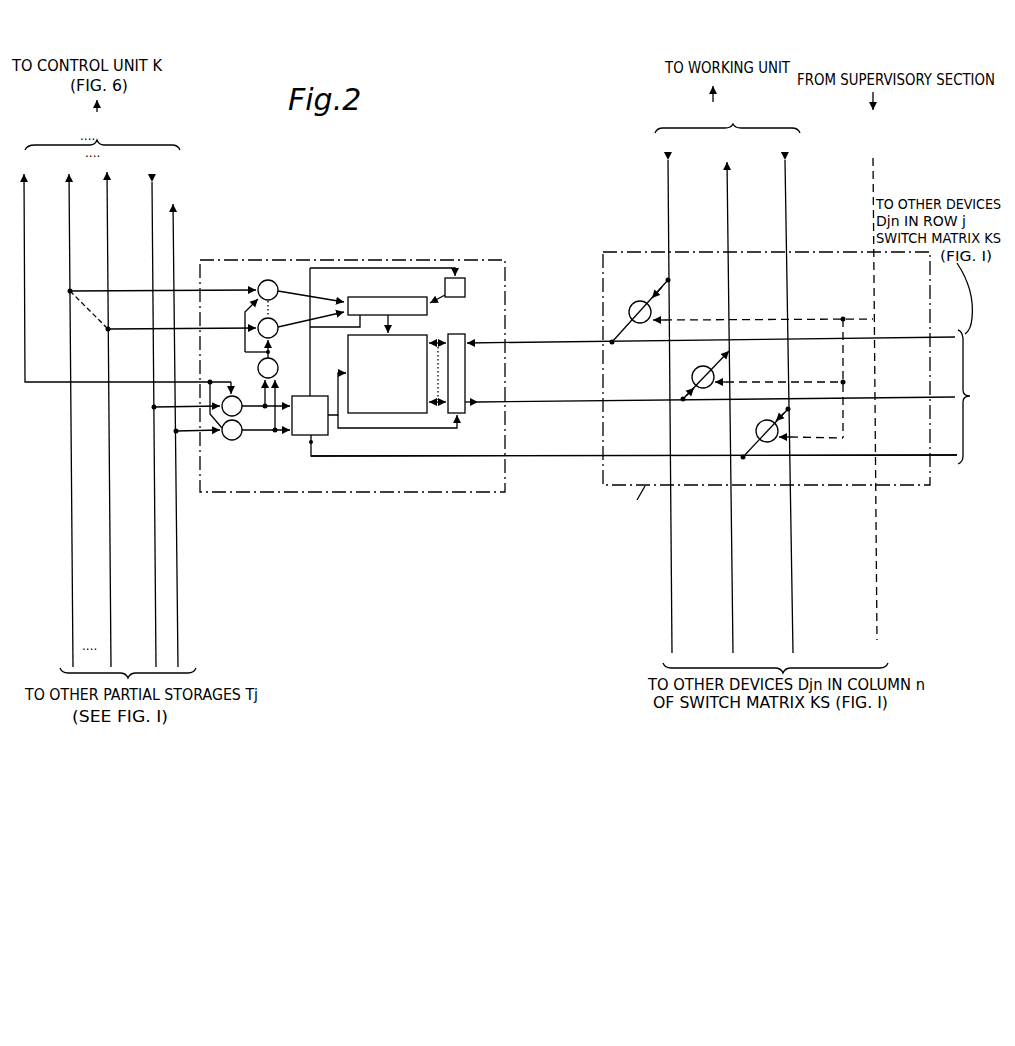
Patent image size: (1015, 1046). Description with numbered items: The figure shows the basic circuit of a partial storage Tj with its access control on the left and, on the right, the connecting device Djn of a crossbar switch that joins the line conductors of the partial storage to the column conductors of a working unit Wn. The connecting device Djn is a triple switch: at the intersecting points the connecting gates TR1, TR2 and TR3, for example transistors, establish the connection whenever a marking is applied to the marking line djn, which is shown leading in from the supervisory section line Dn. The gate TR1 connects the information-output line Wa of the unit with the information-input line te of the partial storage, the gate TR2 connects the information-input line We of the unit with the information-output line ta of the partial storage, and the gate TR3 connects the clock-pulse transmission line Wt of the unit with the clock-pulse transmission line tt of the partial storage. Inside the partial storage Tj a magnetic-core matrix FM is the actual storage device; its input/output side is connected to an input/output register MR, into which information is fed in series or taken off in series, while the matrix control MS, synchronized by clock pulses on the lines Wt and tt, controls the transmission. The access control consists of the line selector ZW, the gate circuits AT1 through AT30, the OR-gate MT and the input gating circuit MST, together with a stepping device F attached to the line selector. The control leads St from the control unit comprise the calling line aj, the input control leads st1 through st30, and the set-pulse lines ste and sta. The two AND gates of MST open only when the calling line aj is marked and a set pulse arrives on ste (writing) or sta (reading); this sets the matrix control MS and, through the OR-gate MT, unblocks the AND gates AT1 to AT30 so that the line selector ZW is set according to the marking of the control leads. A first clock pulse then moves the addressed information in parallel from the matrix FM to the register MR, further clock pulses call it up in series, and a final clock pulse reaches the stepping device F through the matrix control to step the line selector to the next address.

The control leads to the control unit St is at (102, 125).
The calling line aj is at (125, 287).
The input control lead st1 is at (155, 407).
The input control lead st30 is at (163, 407).
The set-pulse transmission line for writing ste is at (180, 415).
The set-pulse transmission line for reading sta is at (192, 424).
The partial storage Tj is at (392, 494).
The input gate circuit AT1 is at (294, 309).
The input gate circuit AT30 is at (294, 332).
The OR-gate MT is at (276, 375).
The input gating circuit MST is at (253, 426).
The matrix control MS is at (289, 436).
The line selector ZW is at (382, 300).
The stepping device F is at (462, 278).
The magnetic-core matrix FM is at (397, 374).
The input/output register MR is at (458, 340).
The information-input line of the partial storage te is at (711, 332).
The information-output line of the partial storage ta is at (710, 391).
The clock-pulse transmission line of the partial storage tt is at (634, 446).
The connecting device Djn is at (912, 486).
The marking line djn is at (768, 361).
The connecting gate TR1 is at (640, 311).
The connecting gate TR2 is at (703, 376).
The connecting gate TR3 is at (764, 433).
The working unit Wn is at (727, 109).
The information-output line of the unit Wa is at (669, 396).
The information-input line of the unit We is at (727, 396).
The clock-pulse transmission line of the unit Wt is at (784, 396).
The supervisory section line Dn is at (903, 366).